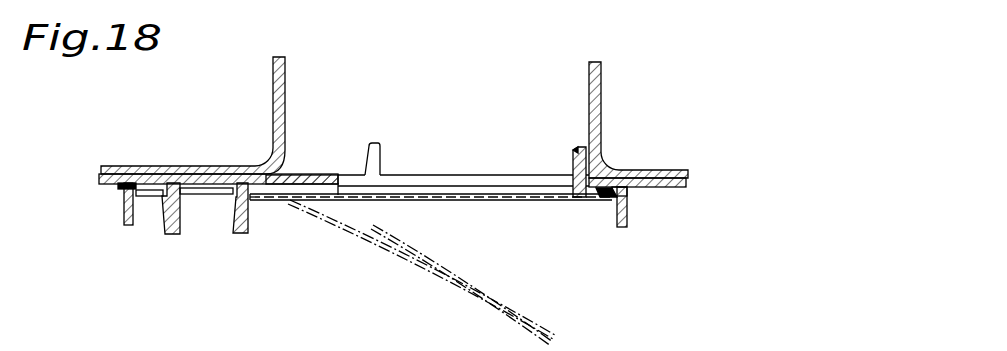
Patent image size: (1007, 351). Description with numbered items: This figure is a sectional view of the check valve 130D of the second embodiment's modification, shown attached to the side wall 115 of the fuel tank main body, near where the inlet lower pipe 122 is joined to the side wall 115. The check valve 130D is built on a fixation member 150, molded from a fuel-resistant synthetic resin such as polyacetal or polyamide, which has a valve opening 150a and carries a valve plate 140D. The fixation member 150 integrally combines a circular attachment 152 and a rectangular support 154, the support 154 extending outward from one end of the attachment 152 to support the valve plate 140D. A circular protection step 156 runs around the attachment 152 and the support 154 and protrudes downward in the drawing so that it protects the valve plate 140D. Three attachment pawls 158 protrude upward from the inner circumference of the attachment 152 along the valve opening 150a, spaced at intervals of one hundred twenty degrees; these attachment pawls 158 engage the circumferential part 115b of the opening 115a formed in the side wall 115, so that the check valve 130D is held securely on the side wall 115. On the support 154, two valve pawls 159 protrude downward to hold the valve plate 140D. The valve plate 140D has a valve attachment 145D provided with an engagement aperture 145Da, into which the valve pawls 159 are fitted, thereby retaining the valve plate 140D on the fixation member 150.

The circumferential part 115b is at (284, 172).
The side wall 115 is at (688, 183).
The opening 115a is at (300, 173).
The valve opening 150a is at (536, 180).
The attachment pawl 158 is at (368, 152).
The inlet lower pipe 122 is at (598, 93).
The circular protection step 156 is at (124, 186).
The rectangular support 154 is at (143, 203).
The valve pawl 159 is at (173, 197).
The valve attachment 145D is at (217, 200).
The engagement aperture 145Da is at (195, 191).
The valve plate 140D is at (471, 202).
The fixation member 150 is at (628, 199).
The circular attachment 152 is at (604, 198).
The check valve 130D is at (558, 263).